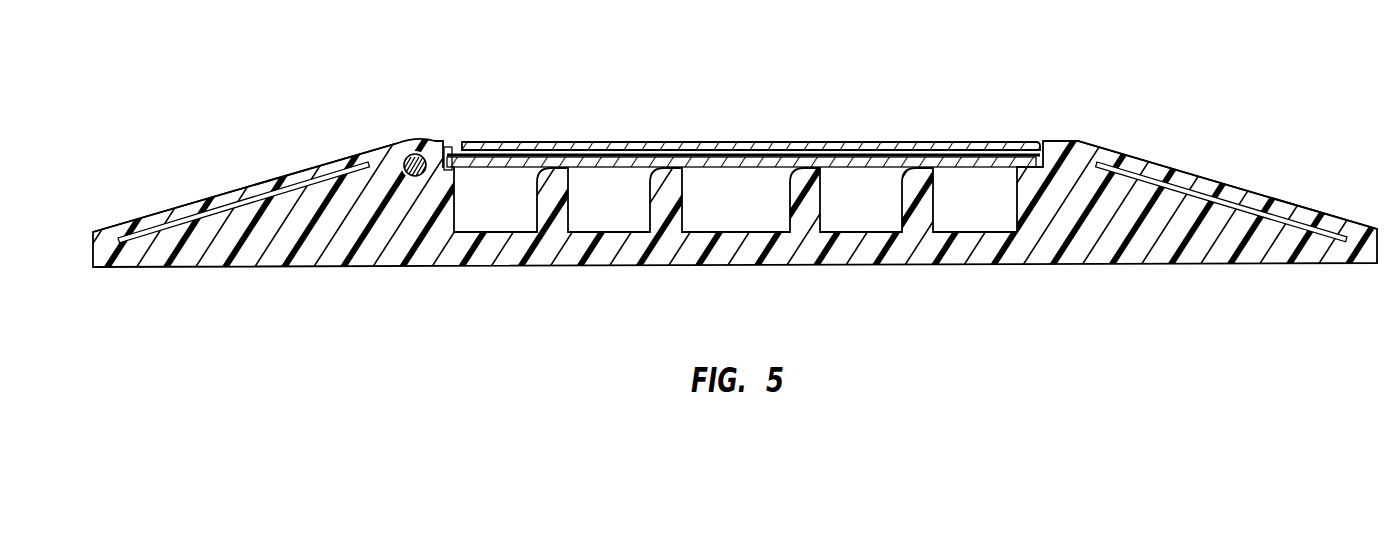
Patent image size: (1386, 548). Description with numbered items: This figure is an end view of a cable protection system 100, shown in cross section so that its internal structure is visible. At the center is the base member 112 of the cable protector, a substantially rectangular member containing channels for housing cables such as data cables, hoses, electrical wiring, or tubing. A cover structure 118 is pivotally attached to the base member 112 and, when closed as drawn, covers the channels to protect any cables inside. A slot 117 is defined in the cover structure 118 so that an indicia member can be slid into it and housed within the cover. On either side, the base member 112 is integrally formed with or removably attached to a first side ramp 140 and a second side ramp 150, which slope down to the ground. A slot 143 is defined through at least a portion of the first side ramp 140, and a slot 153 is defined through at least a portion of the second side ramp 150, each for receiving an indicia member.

The cable protection system 100 is at (715, 180).
The base member 112 is at (722, 265).
The slot 117 is at (592, 145).
The cover structure 118 is at (527, 145).
The second side ramp 150 is at (182, 207).
The slot 153 is at (217, 215).
The first side ramp 140 is at (1205, 177).
The slot 143 is at (1262, 200).